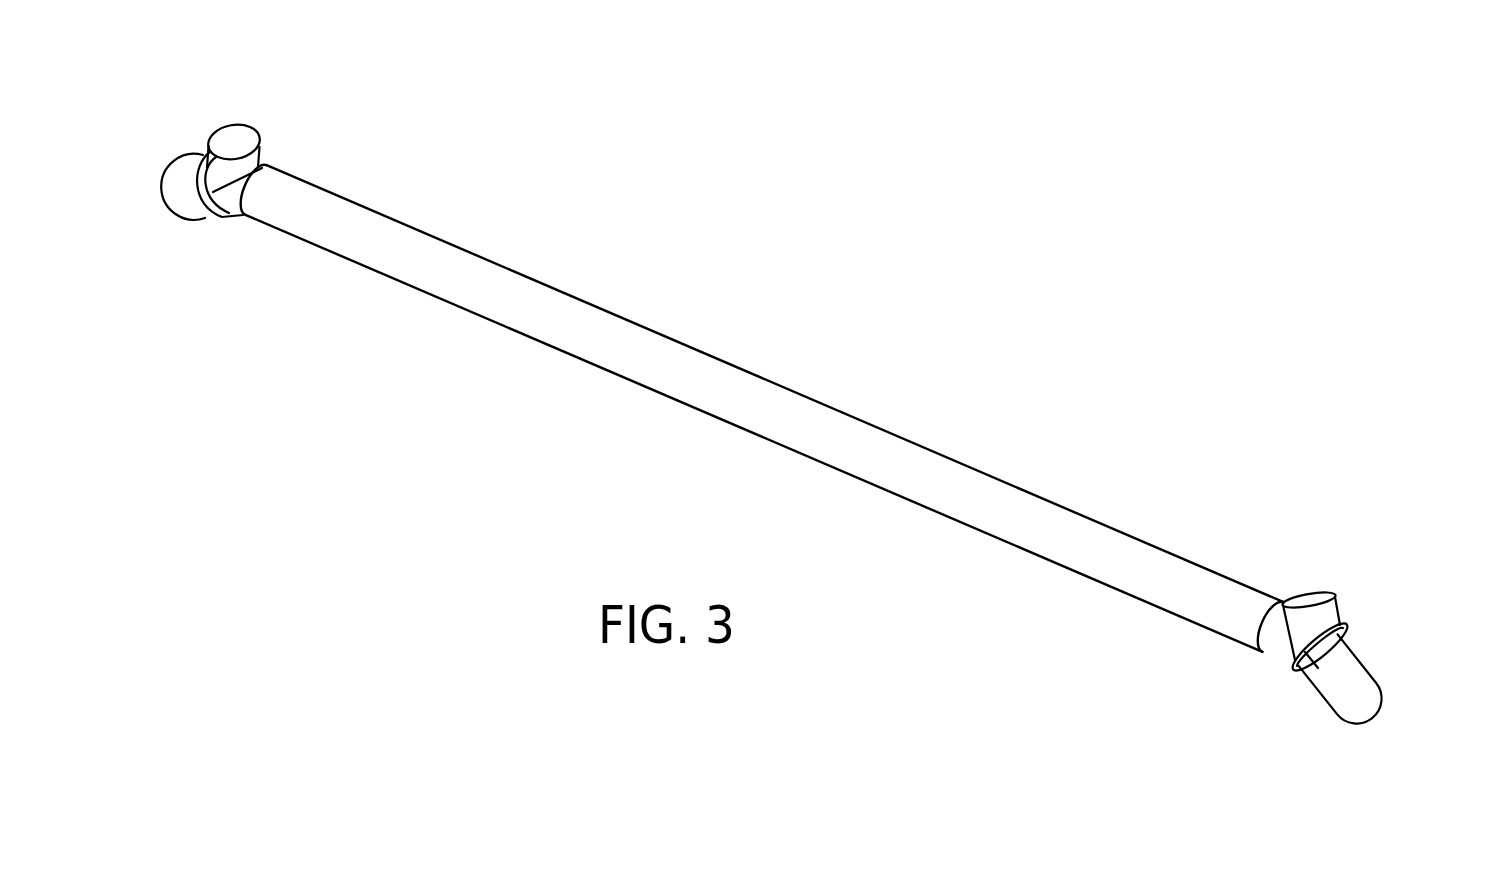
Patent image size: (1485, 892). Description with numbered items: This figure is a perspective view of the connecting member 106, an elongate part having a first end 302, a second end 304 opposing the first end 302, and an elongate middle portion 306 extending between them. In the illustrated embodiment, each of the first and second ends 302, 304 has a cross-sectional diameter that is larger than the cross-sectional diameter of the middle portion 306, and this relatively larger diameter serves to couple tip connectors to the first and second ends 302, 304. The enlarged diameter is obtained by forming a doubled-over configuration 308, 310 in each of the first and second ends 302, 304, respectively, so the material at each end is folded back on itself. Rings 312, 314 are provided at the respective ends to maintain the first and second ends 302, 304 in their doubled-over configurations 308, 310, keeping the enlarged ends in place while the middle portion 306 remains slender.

The connecting member 106 is at (798, 323).
The first end 302 is at (229, 268).
The second end 304 is at (1367, 755).
The elongate middle portion 306 is at (1241, 700).
The doubled-over configuration 308 is at (267, 157).
The doubled-over configuration 310 is at (1358, 638).
The ring 312 is at (175, 161).
The ring 314 is at (1340, 622).